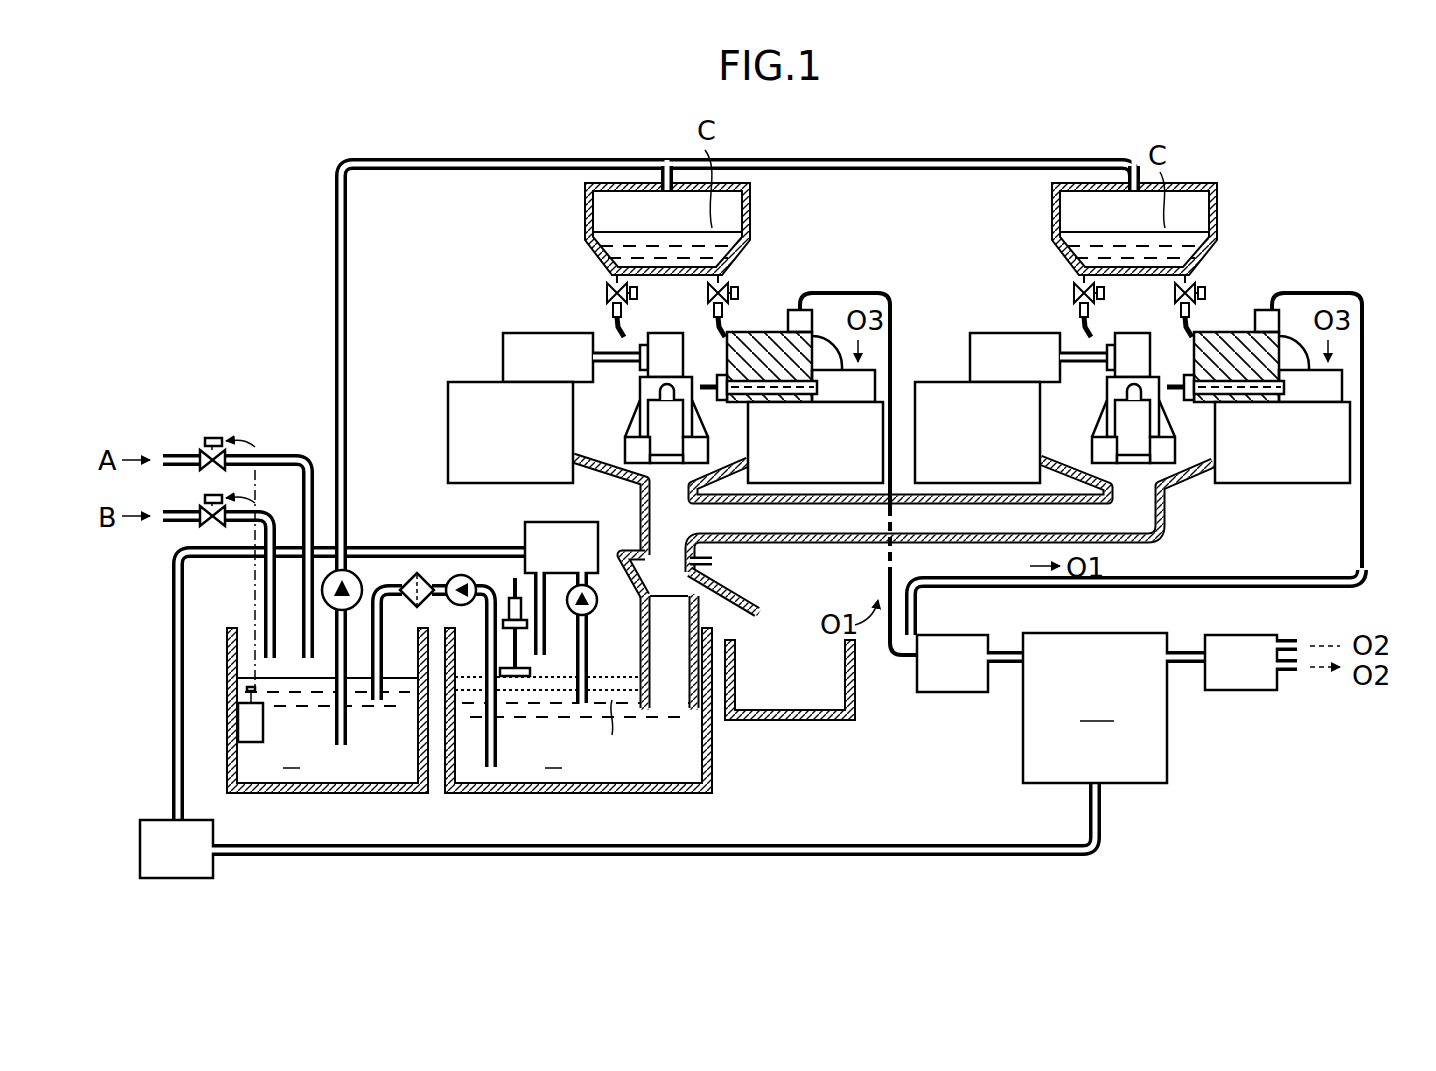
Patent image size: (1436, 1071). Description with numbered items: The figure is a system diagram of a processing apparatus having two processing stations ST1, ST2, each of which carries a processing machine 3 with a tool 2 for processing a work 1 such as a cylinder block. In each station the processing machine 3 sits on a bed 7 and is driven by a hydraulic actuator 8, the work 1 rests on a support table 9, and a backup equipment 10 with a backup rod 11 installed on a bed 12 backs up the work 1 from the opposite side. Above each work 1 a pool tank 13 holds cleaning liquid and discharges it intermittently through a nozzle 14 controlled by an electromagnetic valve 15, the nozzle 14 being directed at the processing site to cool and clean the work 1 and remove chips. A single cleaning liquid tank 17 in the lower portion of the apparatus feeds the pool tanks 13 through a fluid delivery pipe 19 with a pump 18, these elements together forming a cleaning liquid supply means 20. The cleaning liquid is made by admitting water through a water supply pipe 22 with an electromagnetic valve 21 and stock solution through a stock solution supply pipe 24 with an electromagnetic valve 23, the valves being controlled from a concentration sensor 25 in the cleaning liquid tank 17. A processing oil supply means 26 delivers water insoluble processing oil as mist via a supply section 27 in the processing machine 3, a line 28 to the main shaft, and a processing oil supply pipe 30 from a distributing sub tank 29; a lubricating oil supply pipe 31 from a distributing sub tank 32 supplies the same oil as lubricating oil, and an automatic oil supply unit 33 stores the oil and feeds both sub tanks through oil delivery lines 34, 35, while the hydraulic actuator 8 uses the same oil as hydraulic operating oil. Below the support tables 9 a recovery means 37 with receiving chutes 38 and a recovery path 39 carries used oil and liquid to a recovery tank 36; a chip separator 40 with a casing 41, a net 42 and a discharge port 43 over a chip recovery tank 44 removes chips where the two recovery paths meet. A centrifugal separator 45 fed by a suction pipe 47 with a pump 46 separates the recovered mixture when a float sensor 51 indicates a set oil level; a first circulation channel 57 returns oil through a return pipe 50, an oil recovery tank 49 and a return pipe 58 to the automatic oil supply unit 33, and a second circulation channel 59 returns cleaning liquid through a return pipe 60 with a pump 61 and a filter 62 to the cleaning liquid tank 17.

The work 1 is at (665, 348).
The tool 2 is at (708, 386).
The processing machine 3 is at (765, 335).
The bed 7 is at (782, 446).
The hydraulic actuator 8 is at (838, 398).
The support table 9 is at (625, 452).
The backup equipment 10 is at (503, 350).
The backup rod 11 is at (610, 366).
The bed 12 is at (510, 446).
The pool tank 13 is at (588, 202).
The nozzle 14 is at (610, 320).
The electromagnetic valve 15 is at (607, 292).
The cleaning liquid tank 17 is at (275, 795).
The pump 18 is at (345, 572).
The fluid delivery pipe 19 is at (393, 158).
The cleaning liquid supply means 20 is at (324, 250).
The electromagnetic valve 21 is at (210, 436).
The water supply pipe 22 is at (290, 455).
The electromagnetic valve 23 is at (205, 497).
The stock solution supply pipe 24 is at (270, 515).
The concentration sensor 25 is at (240, 715).
The processing oil supply means 26 is at (895, 298).
The supply section 27 is at (796, 312).
The line 28 is at (828, 342).
The distributing sub tank 29 is at (947, 693).
The processing oil supply pipe 30 is at (885, 580).
The lubricating oil supply pipe 31 is at (1290, 644).
The distributing sub tank 32 is at (1226, 692).
The automatic oil supply unit 33 is at (1095, 708).
The oil delivery line 34 is at (1003, 652).
The oil delivery line 35 is at (1185, 652).
The recovery tank 36 is at (600, 795).
The recovery means 37 is at (714, 766).
The receiving chute 38 is at (625, 492).
The recovery path 39 is at (797, 543).
The chip separator 40 is at (716, 565).
The casing 41 is at (622, 566).
The net 42 is at (668, 615).
The discharge port 43 is at (757, 614).
The chip recovery tank 44 is at (822, 720).
The centrifugal separator 45 is at (552, 523).
The pump 46 is at (595, 600).
The suction pipe 47 is at (590, 660).
The oil recovery tank 49 is at (170, 820).
The return pipe 50 is at (172, 632).
The float sensor 51 is at (519, 603).
The first circulation channel 57 is at (900, 843).
The return pipe 58 is at (498, 857).
The second circulation channel 59 is at (435, 578).
The return pipe 60 is at (388, 700).
The pump 61 is at (462, 588).
The filter 62 is at (417, 573).
The processing station ST1 is at (800, 252).
The processing station ST2 is at (1270, 236).